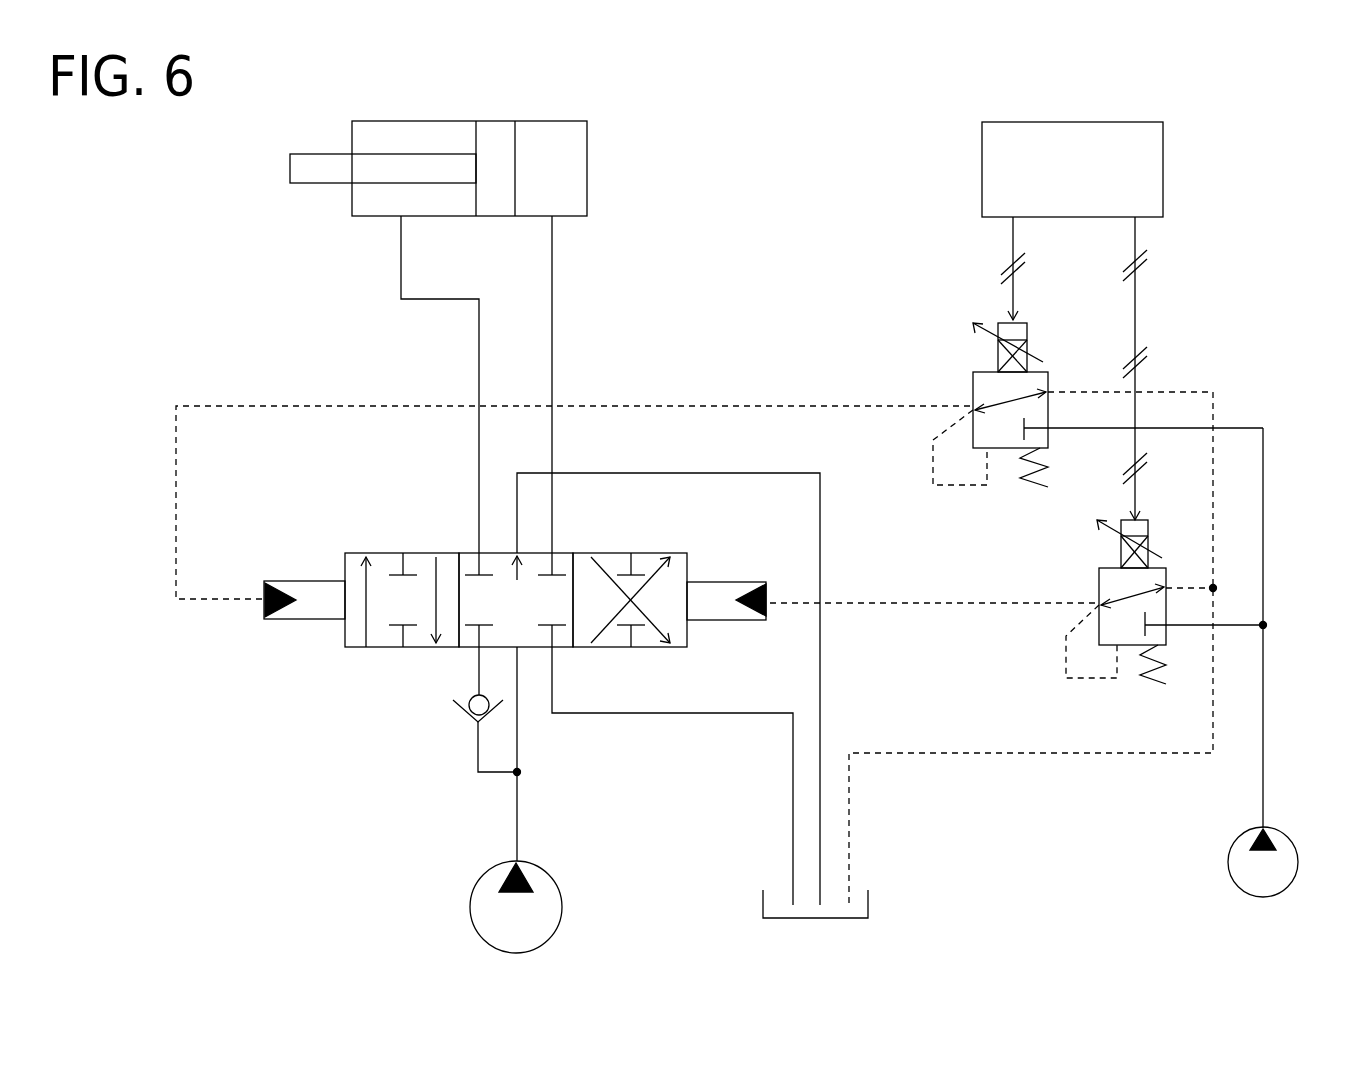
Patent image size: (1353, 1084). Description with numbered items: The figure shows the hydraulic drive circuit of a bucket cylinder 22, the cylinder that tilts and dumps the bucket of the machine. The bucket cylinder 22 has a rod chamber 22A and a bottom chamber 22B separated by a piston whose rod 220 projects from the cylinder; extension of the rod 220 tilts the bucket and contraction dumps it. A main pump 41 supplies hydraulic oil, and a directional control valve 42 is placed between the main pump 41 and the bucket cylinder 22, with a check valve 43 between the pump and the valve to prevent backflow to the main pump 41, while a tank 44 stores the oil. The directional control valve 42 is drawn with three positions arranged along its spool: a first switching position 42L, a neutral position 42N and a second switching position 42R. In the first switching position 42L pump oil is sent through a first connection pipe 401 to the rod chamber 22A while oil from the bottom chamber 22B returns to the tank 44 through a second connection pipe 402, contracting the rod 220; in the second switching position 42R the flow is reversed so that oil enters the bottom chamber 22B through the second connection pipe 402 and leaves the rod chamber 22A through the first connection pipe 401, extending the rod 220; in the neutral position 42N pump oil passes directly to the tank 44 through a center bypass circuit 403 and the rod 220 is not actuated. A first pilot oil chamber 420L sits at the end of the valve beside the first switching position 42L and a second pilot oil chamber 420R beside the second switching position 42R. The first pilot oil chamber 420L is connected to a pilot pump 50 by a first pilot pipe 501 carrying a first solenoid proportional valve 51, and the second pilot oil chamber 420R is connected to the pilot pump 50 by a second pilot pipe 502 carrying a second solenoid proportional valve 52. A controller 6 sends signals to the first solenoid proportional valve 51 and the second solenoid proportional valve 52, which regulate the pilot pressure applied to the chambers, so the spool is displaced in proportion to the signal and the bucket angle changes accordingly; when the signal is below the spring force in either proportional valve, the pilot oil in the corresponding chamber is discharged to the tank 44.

The controller 6 is at (1165, 143).
The bucket cylinder 22 is at (590, 157).
The rod chamber 22A is at (402, 129).
The bottom chamber 22B is at (550, 129).
The rod 220 is at (323, 158).
The main pump 41 is at (557, 888).
The directional control valve 42 is at (517, 614).
The first switching position 42L is at (370, 553).
The neutral position 42N is at (562, 550).
The second switching position 42R is at (653, 552).
The first pilot oil chamber 420L is at (292, 580).
The second pilot oil chamber 420R is at (720, 580).
The check valve 43 is at (478, 718).
The tank 44 is at (868, 905).
The pilot pump 50 is at (1292, 840).
The first solenoid proportional valve 51 is at (970, 386).
The second solenoid proportional valve 52 is at (1098, 582).
The first connection pipe 401 is at (479, 323).
The second connection pipe 402 is at (552, 322).
The center bypass circuit 403 is at (665, 472).
The first pilot pipe 501 is at (820, 406).
The second pilot pipe 502 is at (940, 603).